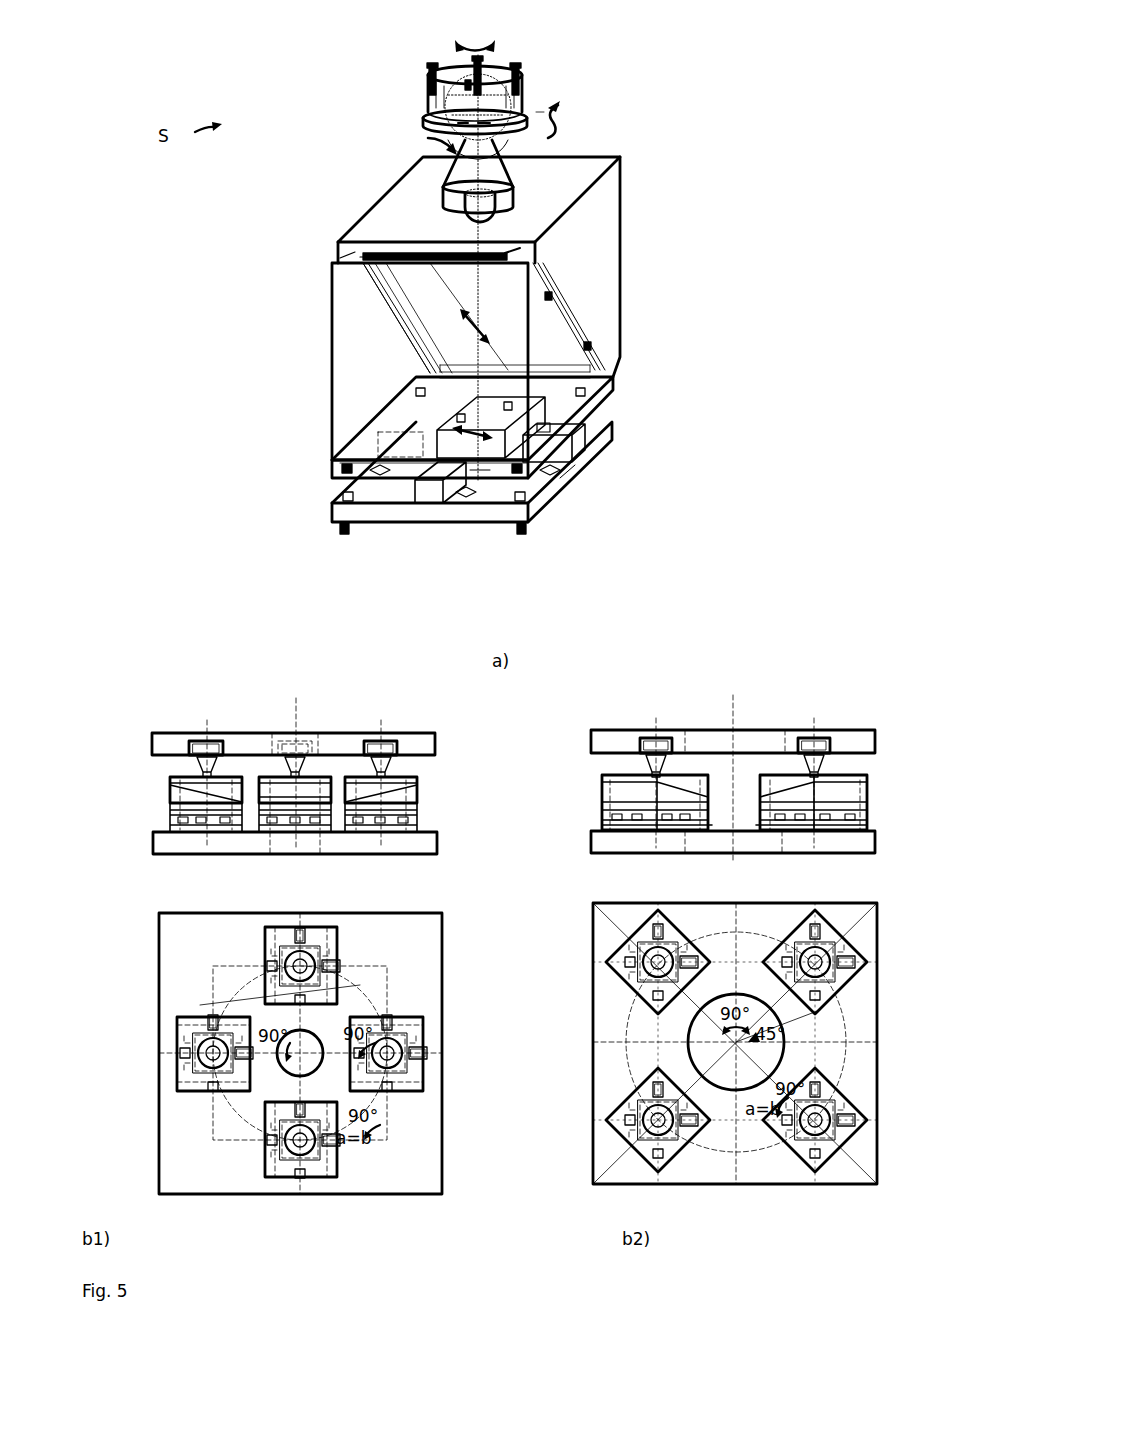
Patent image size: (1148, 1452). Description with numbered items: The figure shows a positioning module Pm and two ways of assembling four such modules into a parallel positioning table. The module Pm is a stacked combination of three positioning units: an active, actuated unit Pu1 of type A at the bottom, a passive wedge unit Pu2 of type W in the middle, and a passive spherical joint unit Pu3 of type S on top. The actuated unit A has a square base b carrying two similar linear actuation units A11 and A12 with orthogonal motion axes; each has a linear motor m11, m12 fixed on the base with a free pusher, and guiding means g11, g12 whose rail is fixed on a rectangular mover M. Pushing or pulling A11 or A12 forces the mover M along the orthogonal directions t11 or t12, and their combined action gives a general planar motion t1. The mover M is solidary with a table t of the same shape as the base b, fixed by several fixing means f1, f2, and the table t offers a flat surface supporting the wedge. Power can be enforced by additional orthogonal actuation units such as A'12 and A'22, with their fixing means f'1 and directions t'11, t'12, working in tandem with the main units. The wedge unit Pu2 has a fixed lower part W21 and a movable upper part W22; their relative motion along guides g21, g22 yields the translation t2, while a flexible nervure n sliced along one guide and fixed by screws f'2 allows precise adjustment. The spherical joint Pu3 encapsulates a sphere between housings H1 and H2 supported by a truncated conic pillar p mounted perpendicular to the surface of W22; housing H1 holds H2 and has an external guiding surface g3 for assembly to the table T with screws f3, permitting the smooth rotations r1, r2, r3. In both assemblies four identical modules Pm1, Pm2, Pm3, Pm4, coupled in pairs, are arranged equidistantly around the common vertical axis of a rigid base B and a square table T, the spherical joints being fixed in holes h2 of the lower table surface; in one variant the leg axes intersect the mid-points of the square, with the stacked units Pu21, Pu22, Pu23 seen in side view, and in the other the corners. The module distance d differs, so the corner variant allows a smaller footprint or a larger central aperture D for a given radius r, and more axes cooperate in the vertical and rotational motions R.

The spherical joint S is at (491, 92).
The rotation about vertical axis r3 is at (470, 45).
The screw fixing means f3 is at (428, 68).
The house H1 is at (520, 92).
The guiding surface g3 is at (540, 107).
The rotation about second axis r2 is at (560, 124).
The house H2 is at (430, 125).
The rotation about first axis r1 is at (450, 135).
The truncated conic pillar p is at (493, 183).
The movable upper wedge part W22 is at (587, 210).
The fixed lower wedge part W21 is at (373, 360).
The wedge guiding means g22 is at (373, 299).
The wedge guiding means g21 is at (540, 310).
The fixing means f'2 is at (614, 321).
The flexible nervure n is at (520, 257).
The translational motion t2 is at (481, 326).
The additional orthogonal actuation unit A'12 is at (515, 370).
The table t is at (506, 423).
The translation carriage t'11 is at (518, 427).
The planar motion t1 is at (472, 412).
The clamps of first unit f'1 is at (434, 400).
The second plate of first unit A'22 is at (393, 447).
The fixing means f2 is at (340, 466).
The translation marker t'12 is at (337, 493).
The linear actuation unit A12 is at (652, 515).
The linear actuated motor m12 is at (597, 452).
The orthogonal motion direction t12 is at (587, 462).
The guiding means g12 is at (565, 488).
The fixing means f1 is at (340, 527).
The linear actuated motor m11 is at (408, 507).
The orthogonal motion direction t11 is at (470, 462).
The guiding means g11 is at (487, 468).
The mover M is at (545, 512).
The base b is at (513, 525).
The linear actuation unit A11 is at (437, 563).
The positioning module Pm is at (705, 540).
The wedge W is at (206, 312).
The actuated positioning unit A is at (186, 487).
The third positioning unit Pu3 is at (735, 158).
The second positioning unit Pu2 is at (735, 165).
The first positioning unit Pu1 is at (735, 375).
The table T is at (268, 742).
The rigid base B is at (340, 836).
The partially through hole h2 is at (410, 738).
The positioning unit 23 Pu23 is at (388, 768).
The positioning unit 22 Pu22 is at (410, 795).
The positioning unit 21 Pu21 is at (410, 818).
The positioning module Pm1 is at (283, 1172).
The positioning module Pm2 is at (423, 1075).
The positioning module Pm3 is at (315, 932).
The positioning module Pm4 is at (182, 1037).
The central aperture diameter D is at (282, 1053).
The radius r is at (300, 1053).
The distance between modules d is at (358, 985).
The rotational motion R is at (788, 1037).